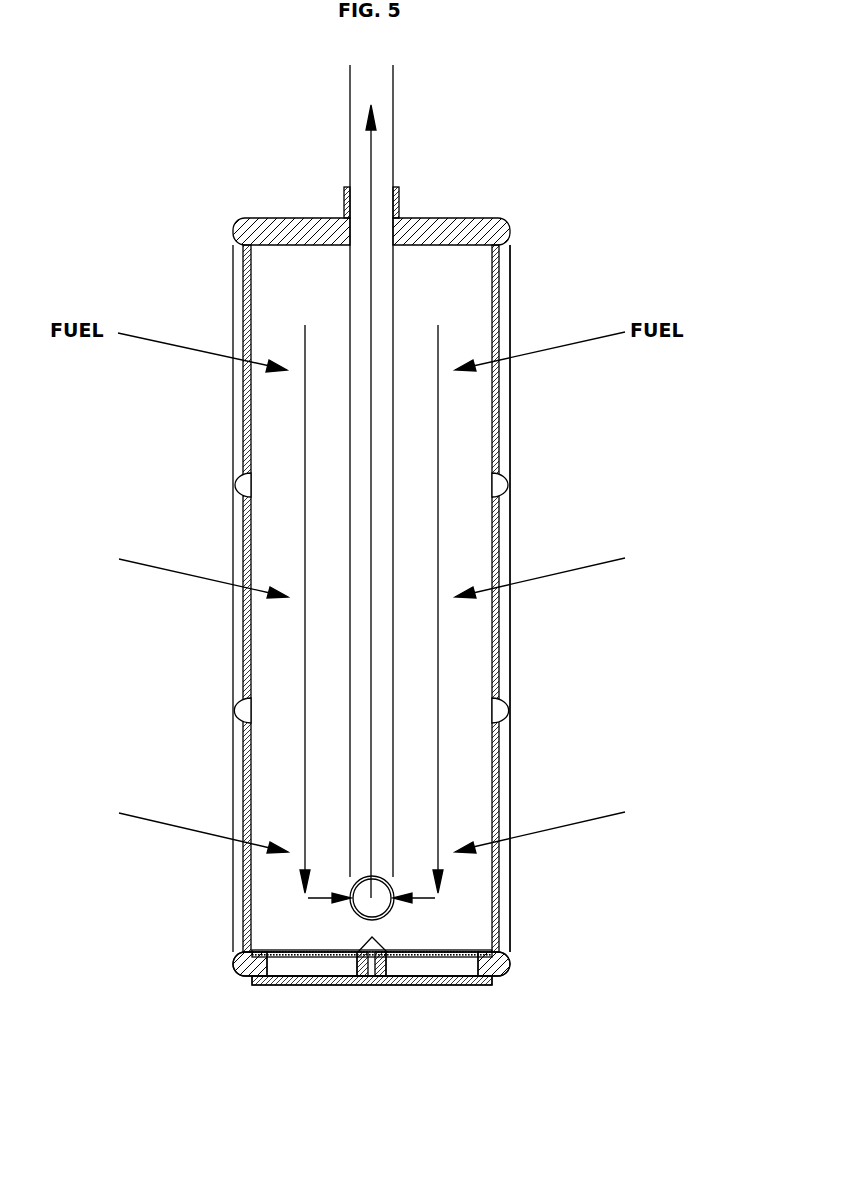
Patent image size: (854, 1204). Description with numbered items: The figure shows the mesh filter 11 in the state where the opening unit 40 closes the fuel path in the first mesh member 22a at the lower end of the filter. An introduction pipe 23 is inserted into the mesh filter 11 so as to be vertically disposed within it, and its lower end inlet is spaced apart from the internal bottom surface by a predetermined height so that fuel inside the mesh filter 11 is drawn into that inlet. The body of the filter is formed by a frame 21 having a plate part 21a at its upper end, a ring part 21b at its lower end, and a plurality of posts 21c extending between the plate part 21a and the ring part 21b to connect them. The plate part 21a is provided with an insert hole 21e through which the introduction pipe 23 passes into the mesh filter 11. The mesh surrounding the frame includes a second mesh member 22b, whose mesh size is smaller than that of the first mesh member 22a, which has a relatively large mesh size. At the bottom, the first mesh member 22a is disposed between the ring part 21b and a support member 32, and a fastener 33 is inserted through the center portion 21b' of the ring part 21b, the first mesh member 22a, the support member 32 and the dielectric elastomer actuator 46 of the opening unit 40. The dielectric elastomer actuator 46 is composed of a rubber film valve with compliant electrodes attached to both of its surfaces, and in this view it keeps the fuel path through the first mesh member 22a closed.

The mesh filter 11 is at (544, 278).
The frame 21 is at (484, 202).
The plate part 21a is at (255, 218).
The ring part 21b is at (425, 985).
The center portion 21b' is at (405, 1001).
The posts 21c is at (510, 622).
The insert hole 21e is at (344, 195).
The first mesh member 22a is at (442, 952).
The second mesh member 22b is at (495, 418).
The introduction pipe 23 is at (393, 118).
The support member 32 is at (255, 952).
The fastener 33 is at (376, 937).
The opening unit 40 is at (275, 1006).
The dielectric elastomer actuator 46 is at (330, 985).